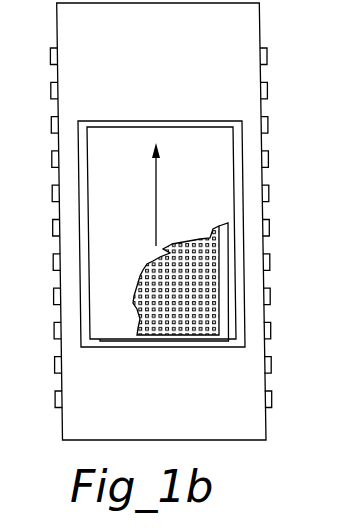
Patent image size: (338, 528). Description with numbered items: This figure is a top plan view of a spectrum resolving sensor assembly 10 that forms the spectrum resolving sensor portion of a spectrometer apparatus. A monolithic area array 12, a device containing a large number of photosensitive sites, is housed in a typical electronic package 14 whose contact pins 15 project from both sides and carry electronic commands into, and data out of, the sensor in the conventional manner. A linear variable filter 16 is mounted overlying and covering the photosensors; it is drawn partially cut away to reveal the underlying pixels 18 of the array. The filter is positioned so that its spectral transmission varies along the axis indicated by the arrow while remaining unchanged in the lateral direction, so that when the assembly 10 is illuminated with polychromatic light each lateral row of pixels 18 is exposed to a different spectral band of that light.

The spectrum resolving sensor assembly 10 is at (135, 58).
The monolithic area array 12 is at (213, 255).
The electronic package 14 is at (260, 22).
The contact pins 15 is at (268, 89).
The linear variable filter 16 is at (220, 161).
The pixels 18 is at (187, 335).